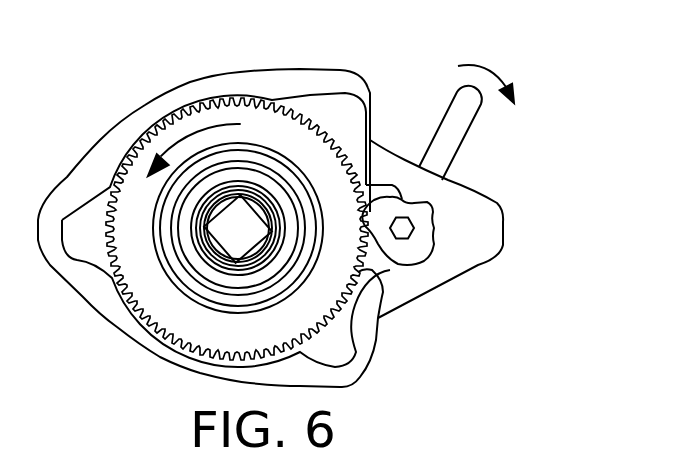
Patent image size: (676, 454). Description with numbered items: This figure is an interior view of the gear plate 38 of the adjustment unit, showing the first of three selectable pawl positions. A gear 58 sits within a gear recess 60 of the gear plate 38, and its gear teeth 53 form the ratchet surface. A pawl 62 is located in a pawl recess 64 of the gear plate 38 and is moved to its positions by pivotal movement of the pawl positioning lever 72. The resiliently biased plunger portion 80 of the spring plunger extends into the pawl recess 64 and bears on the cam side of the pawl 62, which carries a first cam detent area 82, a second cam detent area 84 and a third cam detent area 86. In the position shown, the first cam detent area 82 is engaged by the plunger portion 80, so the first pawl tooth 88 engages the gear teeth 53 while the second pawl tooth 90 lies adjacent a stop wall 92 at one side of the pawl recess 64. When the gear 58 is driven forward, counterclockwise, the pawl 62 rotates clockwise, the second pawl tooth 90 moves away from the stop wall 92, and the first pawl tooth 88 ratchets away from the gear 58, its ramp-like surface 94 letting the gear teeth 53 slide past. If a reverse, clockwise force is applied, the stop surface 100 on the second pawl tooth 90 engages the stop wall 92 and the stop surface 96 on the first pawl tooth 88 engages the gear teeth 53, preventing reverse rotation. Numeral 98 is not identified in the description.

The gear plate 38 is at (184, 84).
The gear teeth 53 is at (177, 338).
The gear 58 is at (163, 305).
The gear recess 60 is at (303, 313).
The pawl 62 is at (395, 248).
The pawl recess 64 is at (403, 260).
The pawl positioning lever 72 is at (456, 90).
The plunger portion 80 is at (437, 235).
The first cam detent area 82 is at (436, 228).
The second cam detent area 84 is at (390, 185).
The third cam detent area 86 is at (385, 212).
The first pawl tooth 88 is at (371, 80).
The second pawl tooth 90 is at (440, 243).
The stop wall 92 is at (433, 217).
The ramp-like surface 94 is at (334, 92).
The stop surface 96 is at (407, 206).
The pawl notch 98 is at (428, 250).
The stop surface 100 is at (437, 240).